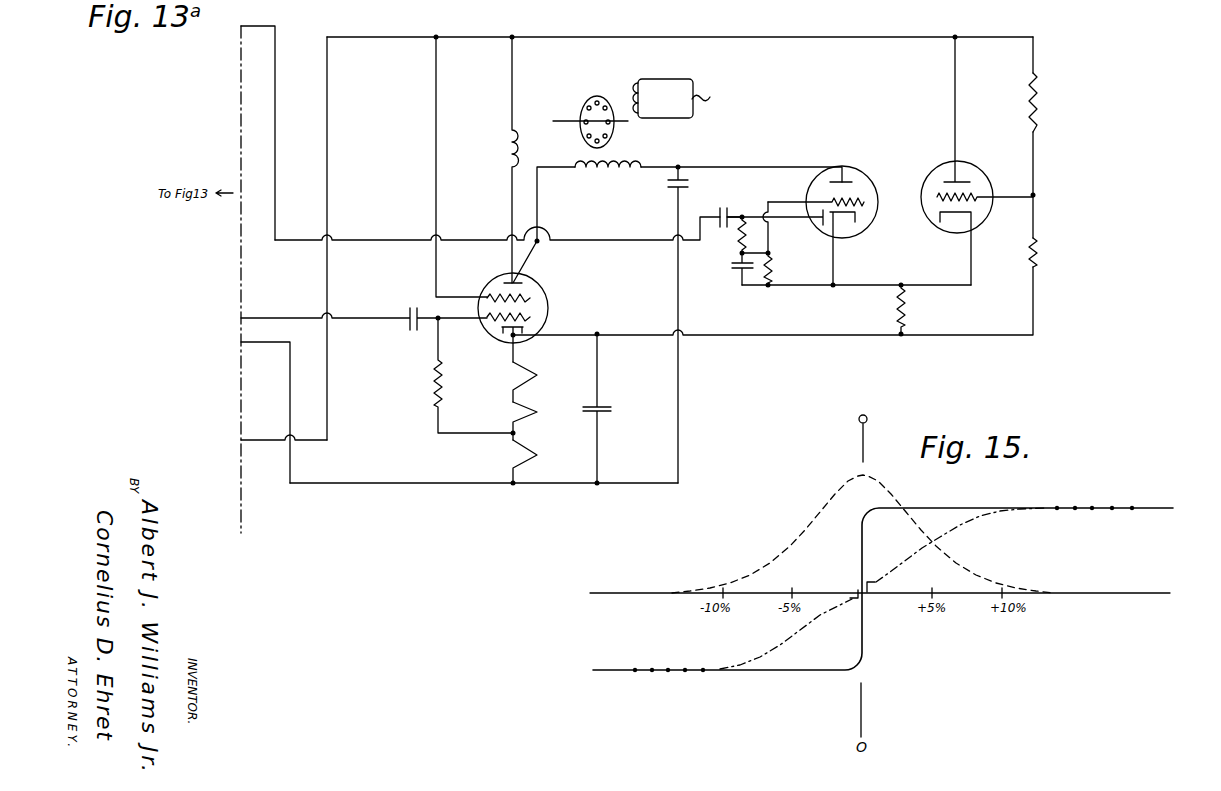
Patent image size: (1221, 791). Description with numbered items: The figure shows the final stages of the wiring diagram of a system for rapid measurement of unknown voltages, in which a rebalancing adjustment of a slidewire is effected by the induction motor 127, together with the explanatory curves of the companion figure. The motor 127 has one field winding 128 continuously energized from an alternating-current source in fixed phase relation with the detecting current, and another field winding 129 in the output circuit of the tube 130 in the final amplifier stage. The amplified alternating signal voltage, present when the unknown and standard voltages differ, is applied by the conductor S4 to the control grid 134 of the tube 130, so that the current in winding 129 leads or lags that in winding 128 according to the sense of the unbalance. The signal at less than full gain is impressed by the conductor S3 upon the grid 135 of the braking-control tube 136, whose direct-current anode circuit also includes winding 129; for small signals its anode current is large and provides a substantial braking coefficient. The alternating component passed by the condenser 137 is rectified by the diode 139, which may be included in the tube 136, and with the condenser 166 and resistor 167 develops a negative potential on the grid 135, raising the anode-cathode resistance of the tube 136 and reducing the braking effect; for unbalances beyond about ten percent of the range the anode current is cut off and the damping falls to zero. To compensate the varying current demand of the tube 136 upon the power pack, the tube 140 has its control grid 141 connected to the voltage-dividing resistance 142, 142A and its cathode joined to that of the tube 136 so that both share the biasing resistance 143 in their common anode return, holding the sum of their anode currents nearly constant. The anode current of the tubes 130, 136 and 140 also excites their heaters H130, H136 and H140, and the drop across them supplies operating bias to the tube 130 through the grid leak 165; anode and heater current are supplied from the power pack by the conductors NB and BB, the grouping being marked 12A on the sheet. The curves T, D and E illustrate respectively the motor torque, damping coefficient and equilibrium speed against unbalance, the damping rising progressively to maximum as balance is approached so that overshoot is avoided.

In FIG. 13A, the conductor S3 is at (275, 96).
In FIG. 13A, the conductor S4 is at (258, 318).
In FIG. 13A, the conductor NB is at (285, 342).
In FIG. 13A, the conductor BB is at (270, 430).
In FIG. 13A, the amplifier unit 12A is at (806, 113).
In FIG. 13A, the induction motor 127 is at (585, 110).
In FIG. 13A, the field winding 128 is at (642, 99).
In FIG. 13A, the field winding 129 is at (585, 172).
In FIG. 13A, the tube 130 is at (524, 304).
In FIG. 13A, the control grid 134 is at (490, 322).
In FIG. 13A, the grid 135 is at (855, 197).
In FIG. 13A, the braking-control tube 136 is at (818, 215).
In FIG. 13A, the condenser 137 is at (725, 207).
In FIG. 13A, the diode 139 is at (820, 224).
In FIG. 13A, the tube 140 is at (977, 161).
In FIG. 13A, the control grid 141 is at (978, 199).
In FIG. 13A, the voltage-dividing resistance 142 is at (1036, 101).
In FIG. 13A, the voltage-dividing resistance 142A is at (1037, 250).
In FIG. 13A, the biasing resistance 143 is at (905, 306).
In FIG. 13A, the grid leak 165 is at (432, 383).
In FIG. 13A, the condenser 166 is at (738, 275).
In FIG. 13A, the resistor 167 is at (770, 283).
In FIG. 13A, the heater H130 is at (543, 382).
In FIG. 13A, the heater H136 is at (543, 421).
In FIG. 13A, the heater H140 is at (543, 461).
In FIG. 15, the torque curve T is at (774, 670).
In FIG. 15, the damping coefficient curve D is at (790, 553).
In FIG. 15, the equilibrium speed curve E is at (795, 627).